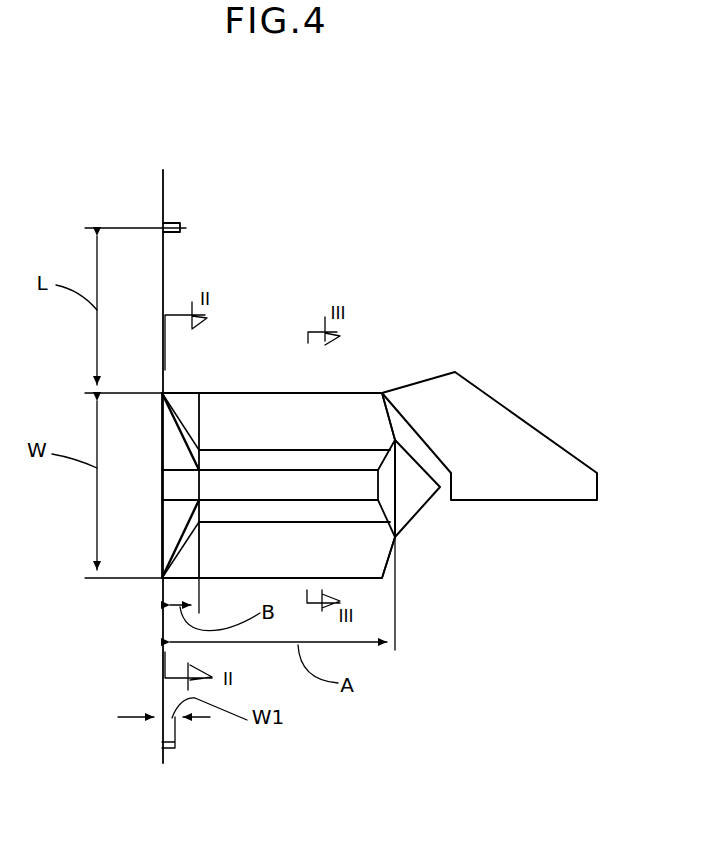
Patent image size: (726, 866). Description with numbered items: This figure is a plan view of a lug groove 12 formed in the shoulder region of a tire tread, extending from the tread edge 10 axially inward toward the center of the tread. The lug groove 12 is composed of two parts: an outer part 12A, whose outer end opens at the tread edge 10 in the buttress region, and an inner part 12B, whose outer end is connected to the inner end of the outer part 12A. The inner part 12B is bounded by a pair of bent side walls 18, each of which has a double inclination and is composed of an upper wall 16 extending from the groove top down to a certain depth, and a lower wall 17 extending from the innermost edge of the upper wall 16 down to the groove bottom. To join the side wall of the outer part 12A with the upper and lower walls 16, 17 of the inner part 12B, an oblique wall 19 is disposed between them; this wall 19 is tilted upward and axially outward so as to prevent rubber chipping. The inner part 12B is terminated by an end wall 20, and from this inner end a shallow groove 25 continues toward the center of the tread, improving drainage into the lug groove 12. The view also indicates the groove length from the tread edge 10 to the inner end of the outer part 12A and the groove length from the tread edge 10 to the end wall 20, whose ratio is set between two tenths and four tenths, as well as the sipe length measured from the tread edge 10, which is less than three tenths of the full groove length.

The tread edge 10 is at (163, 195).
The lug groove 12 is at (337, 247).
The outer part 12A is at (171, 438).
The inner part 12B is at (262, 434).
The upper wall 16 is at (297, 413).
The lower wall 17 is at (307, 467).
The side wall 18 is at (361, 293).
The oblique wall 19 is at (198, 447).
The end wall 20 is at (392, 495).
The shallow groove 25 is at (522, 447).